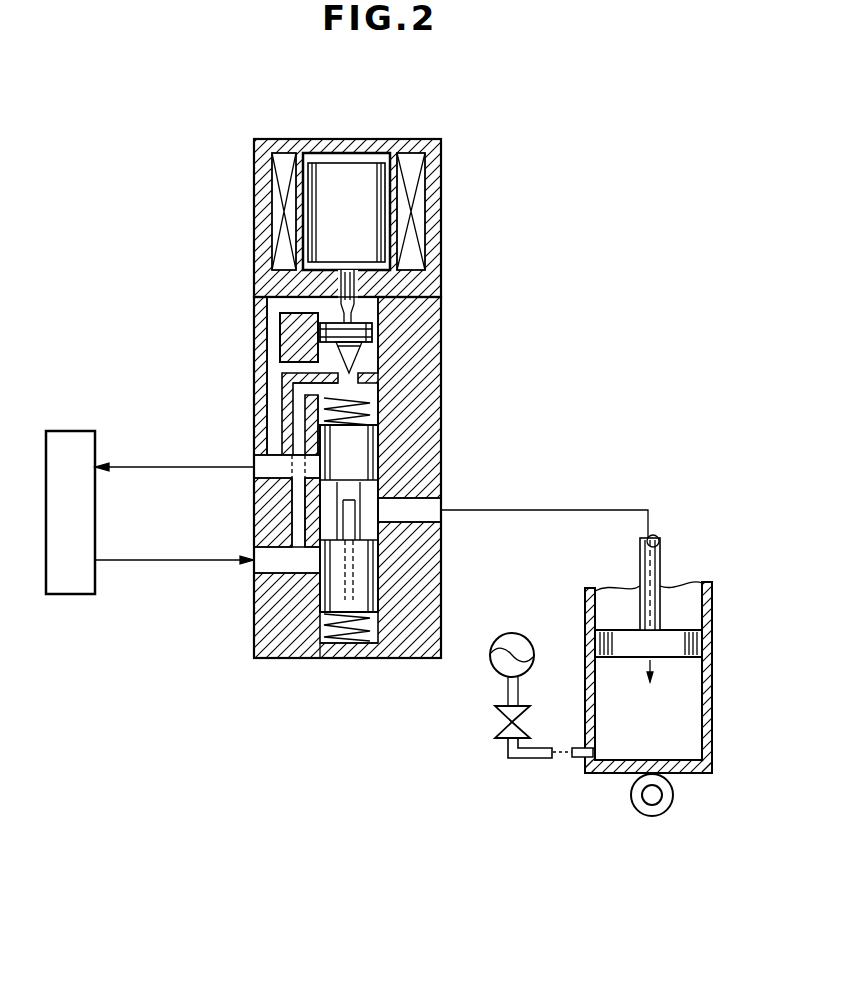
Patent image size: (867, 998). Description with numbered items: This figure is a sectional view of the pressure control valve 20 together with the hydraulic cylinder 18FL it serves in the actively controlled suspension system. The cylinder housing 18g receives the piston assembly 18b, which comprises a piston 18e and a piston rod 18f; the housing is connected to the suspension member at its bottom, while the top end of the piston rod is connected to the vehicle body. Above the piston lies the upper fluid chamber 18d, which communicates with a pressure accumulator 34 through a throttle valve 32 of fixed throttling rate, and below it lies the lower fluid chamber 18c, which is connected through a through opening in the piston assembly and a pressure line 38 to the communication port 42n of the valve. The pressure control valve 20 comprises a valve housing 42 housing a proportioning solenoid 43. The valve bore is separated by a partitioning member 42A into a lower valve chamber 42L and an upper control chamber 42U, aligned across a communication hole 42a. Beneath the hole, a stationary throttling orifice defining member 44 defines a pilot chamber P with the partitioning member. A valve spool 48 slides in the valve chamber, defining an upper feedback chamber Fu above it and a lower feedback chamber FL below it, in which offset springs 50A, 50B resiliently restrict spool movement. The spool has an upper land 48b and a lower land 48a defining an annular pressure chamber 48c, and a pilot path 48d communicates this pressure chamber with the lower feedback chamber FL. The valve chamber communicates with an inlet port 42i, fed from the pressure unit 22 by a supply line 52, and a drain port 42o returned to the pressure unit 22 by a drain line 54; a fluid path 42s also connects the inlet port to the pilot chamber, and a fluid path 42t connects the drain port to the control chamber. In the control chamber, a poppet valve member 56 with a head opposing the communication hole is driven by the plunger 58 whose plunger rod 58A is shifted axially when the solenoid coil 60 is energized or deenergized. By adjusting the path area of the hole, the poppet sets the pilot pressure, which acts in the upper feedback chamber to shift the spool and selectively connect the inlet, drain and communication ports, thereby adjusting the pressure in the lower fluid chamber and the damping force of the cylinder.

The wheel cylinder (front left / rear right) 18FL is at (632, 678).
The piston assembly 18b is at (668, 558).
The lower fluid chamber 18c is at (688, 742).
The upper fluid chamber 18d is at (683, 593).
The piston 18e is at (595, 637).
The piston rod 18f is at (660, 543).
The cylinder housing 18g is at (713, 693).
The pressure control valve 20 is at (360, 404).
The pressure unit 22 is at (68, 431).
The throttle valve 32 is at (497, 728).
The pressure accumulator 34 is at (492, 670).
The pressure line 38 is at (596, 508).
The valve housing 42 is at (380, 412).
The communication hole 42a is at (383, 346).
The partitioning member 42A is at (365, 368).
The inlet port 42i is at (258, 583).
The valve chamber 42L is at (410, 428).
The communication port 42n is at (441, 523).
The drain port 42o is at (268, 467).
The fluid path 42s is at (290, 524).
The fluid path 42t is at (272, 346).
The control chamber 42U is at (270, 300).
The proportioning solenoid 43 is at (446, 190).
The throttling orifice defining member 44 is at (360, 398).
The valve spool 48 is at (355, 532).
The lower land 48a is at (372, 590).
The upper land 48b is at (373, 458).
The annular pressure chamber 48c is at (375, 492).
The piston orifice 48d is at (342, 591).
The offset spring 50A is at (320, 406).
The offset spring 50B is at (355, 655).
The supply line 52 is at (126, 560).
The drain line 54 is at (127, 465).
The poppet valve member 56 is at (322, 330).
The plunger 58 is at (352, 175).
The plunger rod 58A is at (353, 258).
The solenoid coil 60 is at (278, 177).
The pilot chamber P is at (315, 387).
The upper feedback chamber Fu is at (322, 425).
The lower feedback chamber FL is at (326, 640).